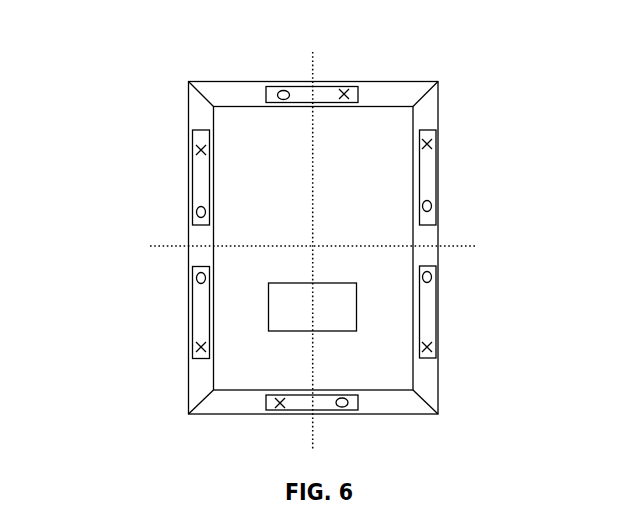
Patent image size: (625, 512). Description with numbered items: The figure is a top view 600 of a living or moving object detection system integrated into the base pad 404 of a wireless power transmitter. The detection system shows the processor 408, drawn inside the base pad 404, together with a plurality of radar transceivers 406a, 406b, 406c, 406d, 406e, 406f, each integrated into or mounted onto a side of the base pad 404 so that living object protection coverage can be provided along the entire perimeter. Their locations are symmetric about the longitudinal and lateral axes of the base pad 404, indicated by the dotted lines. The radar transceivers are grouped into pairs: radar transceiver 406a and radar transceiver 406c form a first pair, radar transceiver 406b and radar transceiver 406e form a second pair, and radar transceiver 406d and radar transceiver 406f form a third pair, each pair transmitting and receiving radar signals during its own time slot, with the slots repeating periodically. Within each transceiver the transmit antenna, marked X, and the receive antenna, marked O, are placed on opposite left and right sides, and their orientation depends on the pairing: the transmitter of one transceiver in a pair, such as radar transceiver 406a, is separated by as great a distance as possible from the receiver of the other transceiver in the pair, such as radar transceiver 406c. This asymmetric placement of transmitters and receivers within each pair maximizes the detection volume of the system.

The top view 600 is at (152, 57).
The base pad 404 is at (332, 258).
The processor 408 is at (313, 307).
The radar transceiver 406a is at (313, 400).
The radar transceiver 406b is at (427, 313).
The radar transceiver 406c is at (427, 172).
The radar transceiver 406d is at (323, 90).
The radar transceiver 406e is at (201, 163).
The radar transceiver 406f is at (200, 312).